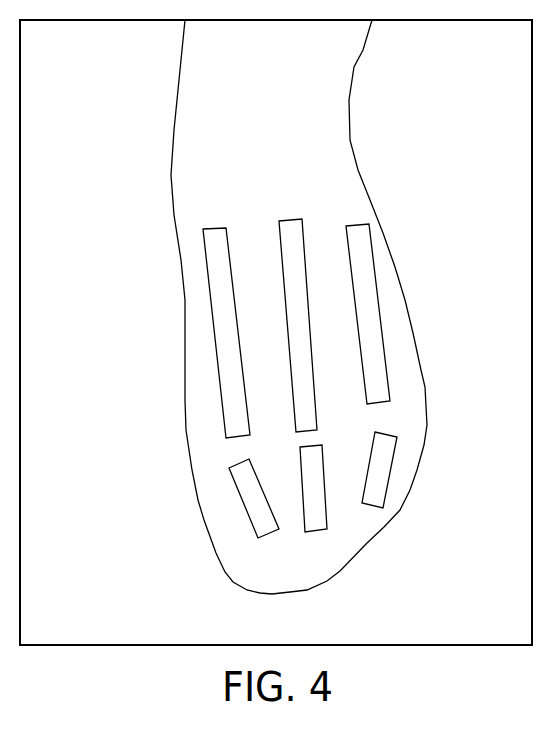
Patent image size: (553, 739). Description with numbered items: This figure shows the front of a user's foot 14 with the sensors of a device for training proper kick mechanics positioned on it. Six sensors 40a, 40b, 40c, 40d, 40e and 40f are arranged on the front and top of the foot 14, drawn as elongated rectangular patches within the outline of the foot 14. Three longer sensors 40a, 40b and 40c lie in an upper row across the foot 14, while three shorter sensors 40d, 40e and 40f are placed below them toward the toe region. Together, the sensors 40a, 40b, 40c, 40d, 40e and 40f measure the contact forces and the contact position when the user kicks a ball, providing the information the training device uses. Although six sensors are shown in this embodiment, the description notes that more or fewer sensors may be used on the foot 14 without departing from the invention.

The foot 14 is at (172, 179).
The sensor 40a is at (203, 253).
The sensor 40b is at (302, 220).
The sensor 40c is at (378, 288).
The sensor 40d is at (232, 467).
The sensor 40e is at (327, 525).
The sensor 40f is at (390, 432).